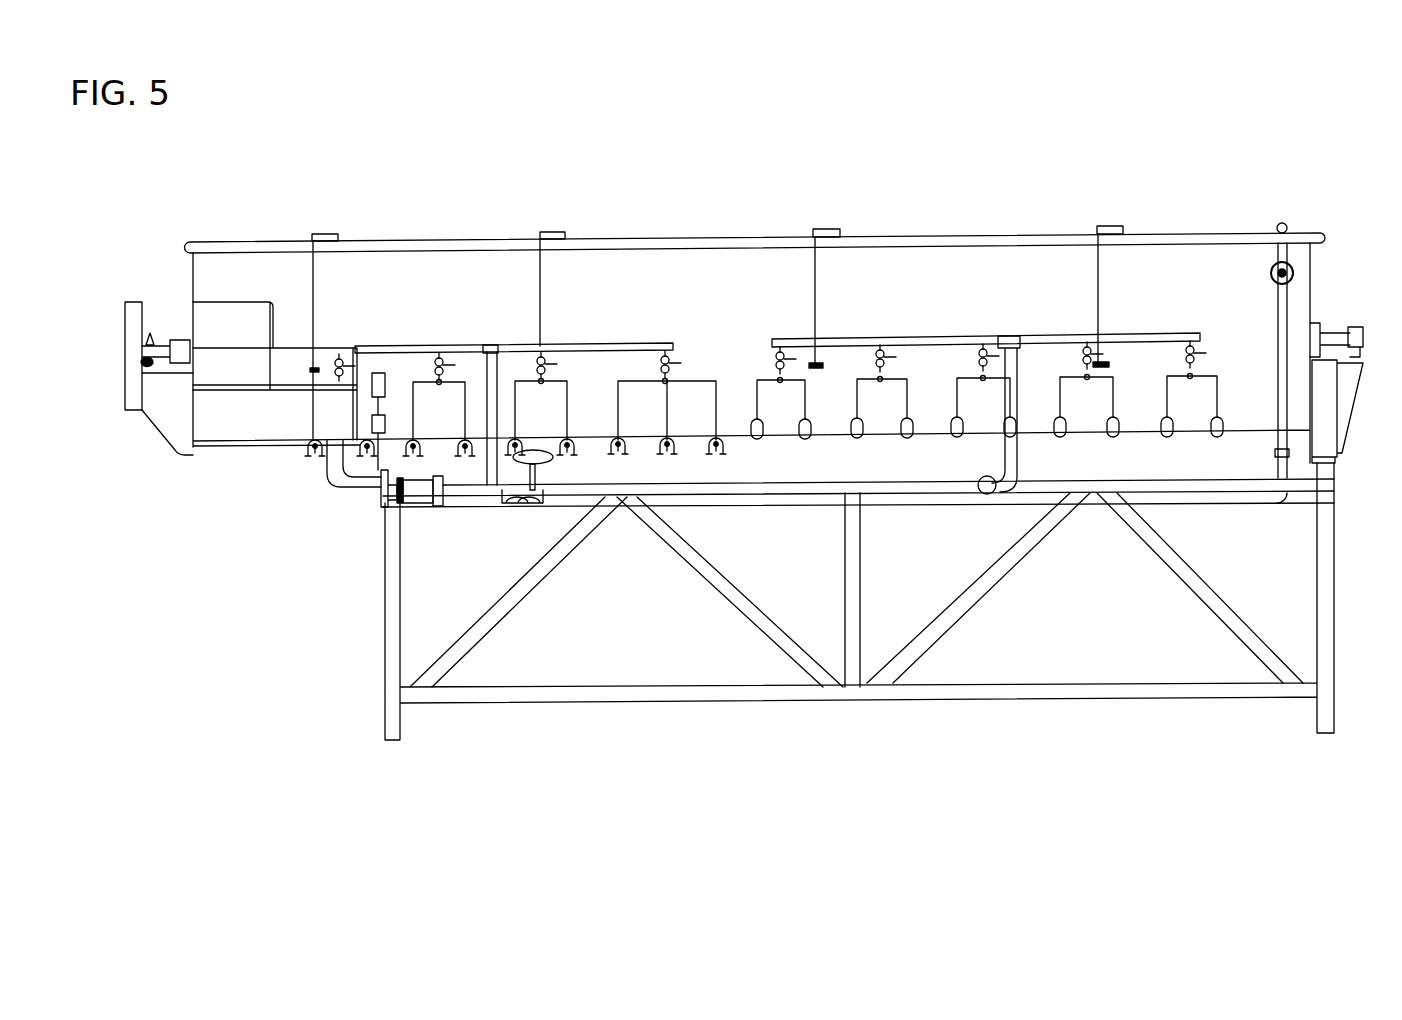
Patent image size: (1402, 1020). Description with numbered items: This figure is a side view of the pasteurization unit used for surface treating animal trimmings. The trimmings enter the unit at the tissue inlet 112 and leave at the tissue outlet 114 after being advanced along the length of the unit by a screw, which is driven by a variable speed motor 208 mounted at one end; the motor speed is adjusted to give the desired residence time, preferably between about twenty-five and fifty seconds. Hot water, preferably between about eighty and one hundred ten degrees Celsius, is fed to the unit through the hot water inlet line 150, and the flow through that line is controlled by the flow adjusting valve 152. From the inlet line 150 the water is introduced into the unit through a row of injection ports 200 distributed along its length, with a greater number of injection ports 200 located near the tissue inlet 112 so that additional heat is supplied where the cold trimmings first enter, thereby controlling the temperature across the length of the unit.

The tissue inlet 112 is at (1236, 198).
The tissue outlet 114 is at (284, 227).
The hot water inlet line 150 is at (592, 349).
The flow adjusting valve 152 is at (553, 463).
The injection ports 200 is at (614, 455).
The variable speed motor 208 is at (131, 351).